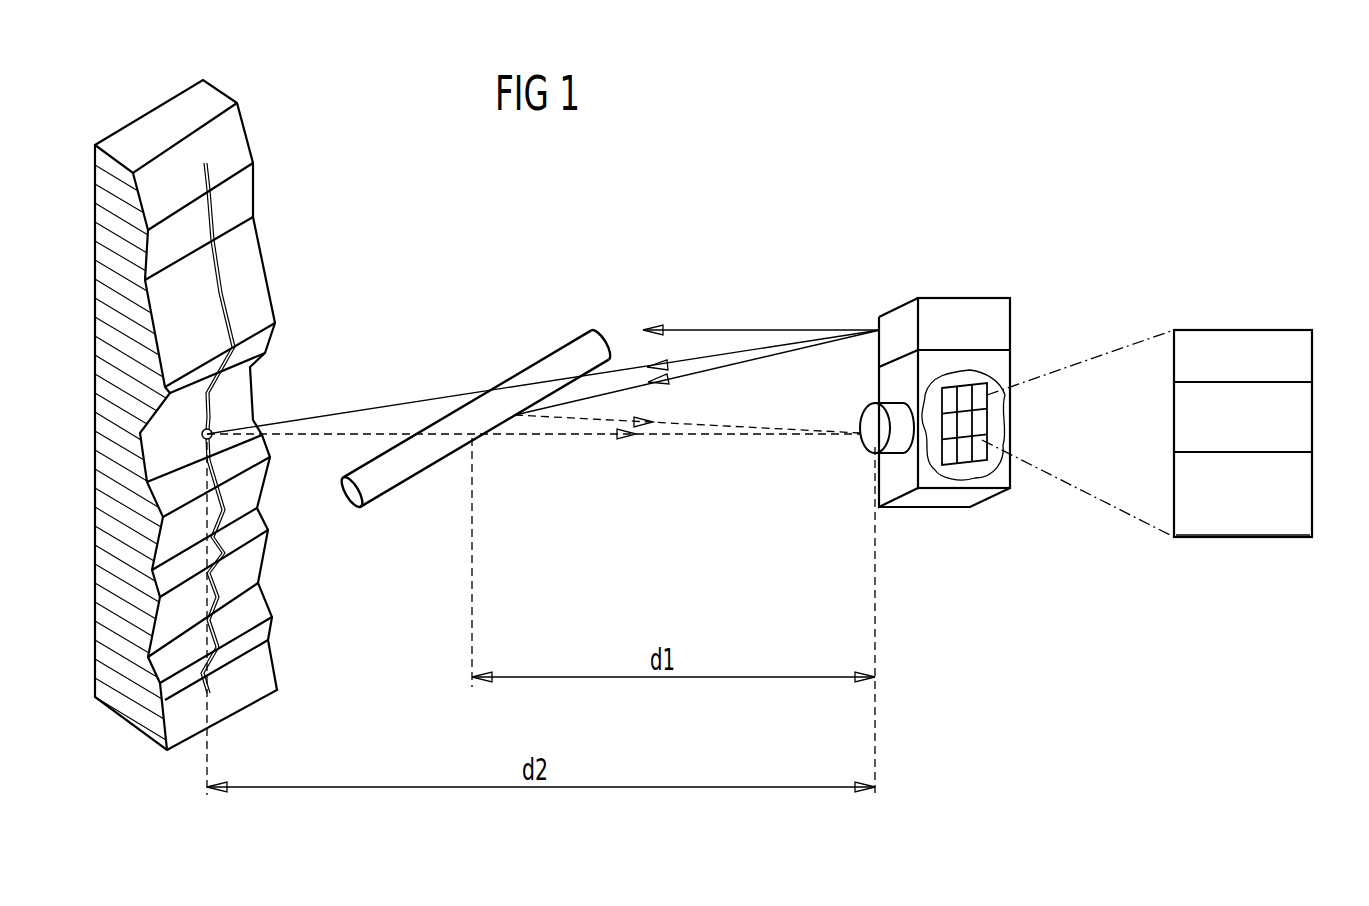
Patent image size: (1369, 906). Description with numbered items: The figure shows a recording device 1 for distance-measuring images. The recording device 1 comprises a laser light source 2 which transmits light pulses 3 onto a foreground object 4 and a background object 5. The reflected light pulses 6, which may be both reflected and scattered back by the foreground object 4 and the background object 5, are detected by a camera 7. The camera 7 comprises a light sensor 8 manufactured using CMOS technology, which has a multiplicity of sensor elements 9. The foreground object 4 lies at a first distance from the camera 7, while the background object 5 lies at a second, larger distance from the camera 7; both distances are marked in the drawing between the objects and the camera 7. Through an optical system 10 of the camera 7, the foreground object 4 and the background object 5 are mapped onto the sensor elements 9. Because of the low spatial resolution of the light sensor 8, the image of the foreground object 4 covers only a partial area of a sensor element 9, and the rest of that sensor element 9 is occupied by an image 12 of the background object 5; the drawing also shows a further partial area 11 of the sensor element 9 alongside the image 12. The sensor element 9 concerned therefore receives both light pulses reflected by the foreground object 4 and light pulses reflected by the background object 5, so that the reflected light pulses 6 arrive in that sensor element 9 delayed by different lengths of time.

The recording device 1 is at (775, 232).
The laser light source 2 is at (960, 298).
The light pulses 3 is at (698, 330).
The foreground object 4 is at (540, 352).
The background object 5 is at (245, 190).
The reflected light pulses 6 is at (703, 438).
The camera 7 is at (1000, 480).
The light sensor 8 is at (992, 393).
The sensor elements 9 is at (965, 424).
The optical system 10 is at (858, 441).
The pixel zone 11 is at (1300, 423).
The image of the background object 12 is at (1298, 495).